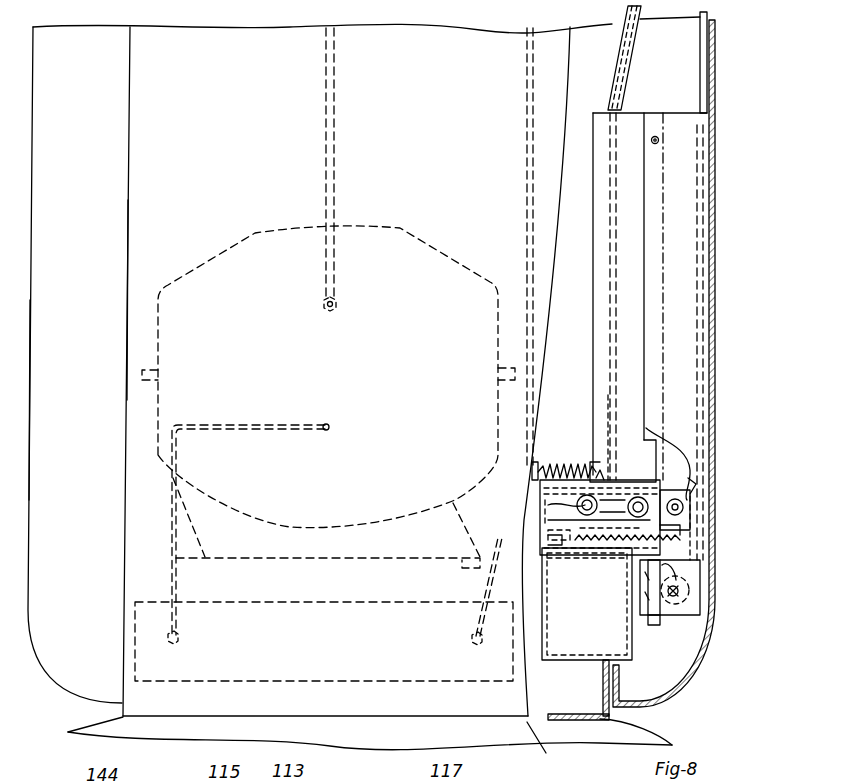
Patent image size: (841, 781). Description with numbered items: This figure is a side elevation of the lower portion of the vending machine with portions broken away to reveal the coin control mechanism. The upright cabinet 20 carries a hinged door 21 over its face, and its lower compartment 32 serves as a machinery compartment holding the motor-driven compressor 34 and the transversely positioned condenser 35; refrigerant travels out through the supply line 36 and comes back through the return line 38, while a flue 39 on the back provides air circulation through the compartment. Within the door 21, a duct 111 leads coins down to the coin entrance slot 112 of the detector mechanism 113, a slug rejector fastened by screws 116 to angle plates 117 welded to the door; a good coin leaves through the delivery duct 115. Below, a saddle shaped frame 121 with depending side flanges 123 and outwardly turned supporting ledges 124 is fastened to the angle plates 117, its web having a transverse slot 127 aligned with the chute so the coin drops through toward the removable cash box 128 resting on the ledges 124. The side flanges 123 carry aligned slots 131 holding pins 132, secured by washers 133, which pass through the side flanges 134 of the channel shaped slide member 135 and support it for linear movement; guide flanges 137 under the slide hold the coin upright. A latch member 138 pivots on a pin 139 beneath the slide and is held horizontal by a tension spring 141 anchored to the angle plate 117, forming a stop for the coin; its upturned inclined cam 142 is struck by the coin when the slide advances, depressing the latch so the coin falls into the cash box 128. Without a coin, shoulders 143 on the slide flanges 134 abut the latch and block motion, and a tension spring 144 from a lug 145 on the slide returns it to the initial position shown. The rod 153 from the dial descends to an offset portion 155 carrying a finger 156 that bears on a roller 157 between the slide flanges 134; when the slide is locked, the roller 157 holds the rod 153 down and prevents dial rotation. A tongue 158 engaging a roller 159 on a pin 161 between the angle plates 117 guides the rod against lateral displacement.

The upright cabinet 20 is at (457, 36).
The hinged door 21 is at (659, 366).
The lower compartment 32 is at (172, 288).
The motor-driven compressor 34 is at (232, 243).
The condenser 35 is at (285, 603).
The supply line 36 is at (527, 176).
The return line 38 is at (334, 160).
The flue 39 is at (57, 400).
The duct 111 is at (630, 56).
The coin entrance slot 112 is at (620, 119).
The detector mechanism 113 is at (594, 362).
The delivery duct 115 is at (610, 420).
The screws 116 is at (658, 141).
The angle plates 117 is at (688, 210).
The saddle shaped frame 121 is at (540, 528).
The side flanges 123 is at (548, 542).
The supporting ledges 124 is at (558, 546).
The transverse slot 127 is at (623, 461).
The cash box 128 is at (563, 650).
The aligned slots 131 is at (562, 522).
The pins 132 is at (575, 498).
The washers 133 is at (570, 512).
The side flanges 134 is at (680, 506).
The slide member 135 is at (678, 450).
The guide flanges 137 is at (600, 460).
The latch member 138 is at (627, 529).
The pin 139 is at (555, 533).
The tension spring 141 is at (622, 556).
The inclined cam 142 is at (562, 578).
The shoulders 143 is at (700, 532).
The tension spring 144 is at (562, 480).
The lug 145 is at (548, 472).
The rod 153 is at (703, 75).
The offset portion 155 is at (685, 568).
The finger 156 is at (668, 530).
The roller 157 is at (690, 490).
The tongue 158 is at (653, 628).
The roller 159 is at (670, 578).
The pin 161 is at (682, 594).